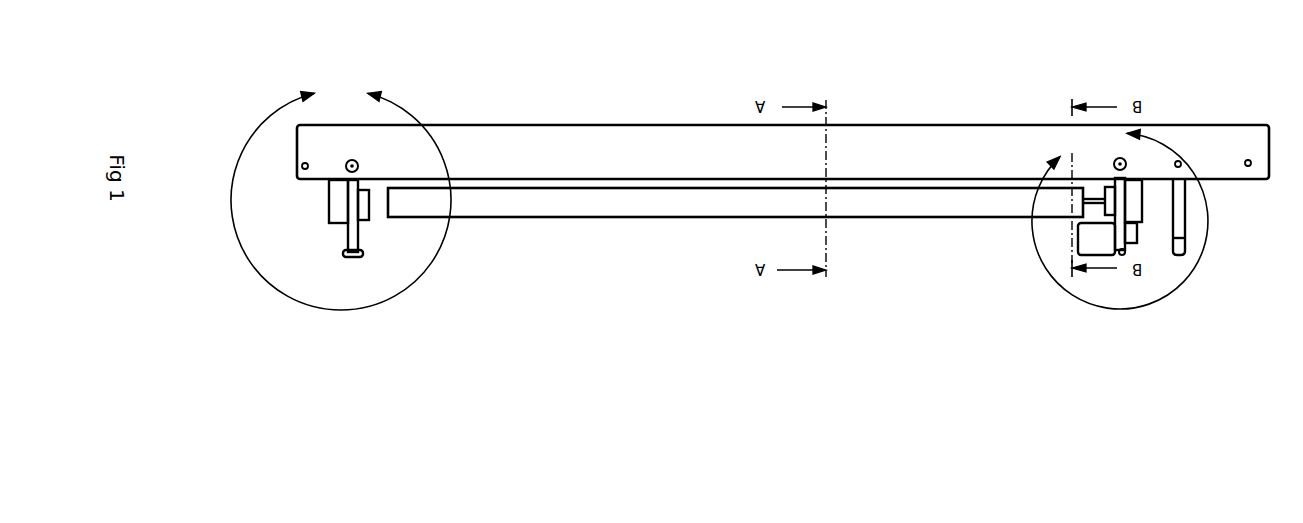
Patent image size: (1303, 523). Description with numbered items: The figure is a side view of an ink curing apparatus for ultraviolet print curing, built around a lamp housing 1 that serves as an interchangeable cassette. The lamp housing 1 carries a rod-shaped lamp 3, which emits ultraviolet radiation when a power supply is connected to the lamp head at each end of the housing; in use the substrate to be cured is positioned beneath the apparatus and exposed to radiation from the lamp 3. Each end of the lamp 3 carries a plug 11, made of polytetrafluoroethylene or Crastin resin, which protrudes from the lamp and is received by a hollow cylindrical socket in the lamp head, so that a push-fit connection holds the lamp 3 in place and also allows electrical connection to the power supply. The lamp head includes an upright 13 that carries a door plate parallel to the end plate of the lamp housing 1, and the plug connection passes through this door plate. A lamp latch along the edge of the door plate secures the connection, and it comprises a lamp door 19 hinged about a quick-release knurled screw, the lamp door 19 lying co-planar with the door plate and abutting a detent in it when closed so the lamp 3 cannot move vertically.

The lamp housing 1 is at (862, 283).
The lamp 3 is at (678, 205).
The plug 11 is at (1107, 198).
The upright 13 is at (1120, 247).
The lamp door 19 is at (1087, 242).